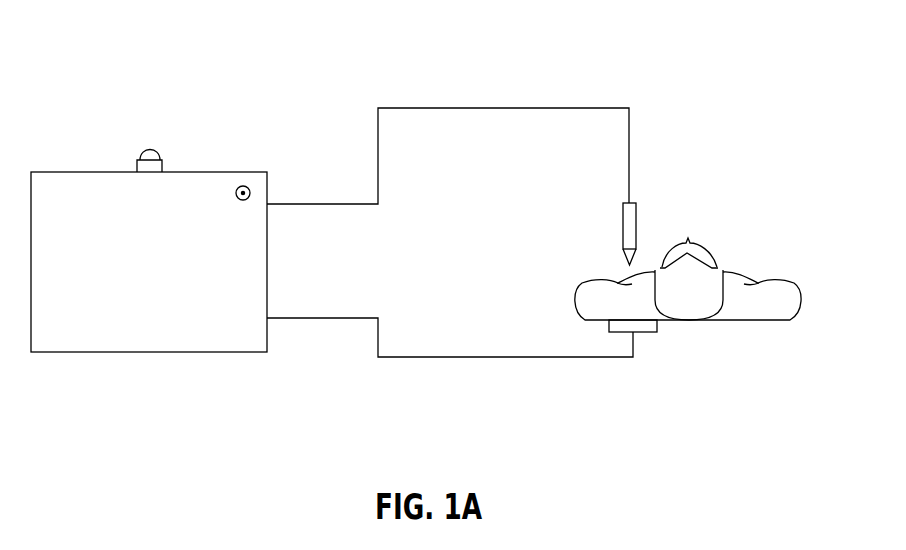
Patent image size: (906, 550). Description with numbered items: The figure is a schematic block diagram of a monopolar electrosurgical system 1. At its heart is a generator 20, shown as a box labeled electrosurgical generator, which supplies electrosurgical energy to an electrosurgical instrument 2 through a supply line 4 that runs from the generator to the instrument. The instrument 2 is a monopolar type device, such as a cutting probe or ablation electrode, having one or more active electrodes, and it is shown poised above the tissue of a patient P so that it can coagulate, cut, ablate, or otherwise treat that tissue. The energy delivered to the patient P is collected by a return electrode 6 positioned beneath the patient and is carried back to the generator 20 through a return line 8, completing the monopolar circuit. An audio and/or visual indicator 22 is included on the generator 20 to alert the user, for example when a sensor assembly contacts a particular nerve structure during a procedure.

The monopolar electrosurgical system 1 is at (122, 51).
The generator 20 is at (90, 172).
The audio and/or visual indicator 22 is at (163, 158).
The supply line 4 is at (505, 108).
The return line 8 is at (520, 358).
The electrosurgical instrument 2 is at (622, 232).
The return electrode 6 is at (648, 333).
The patient P is at (763, 267).